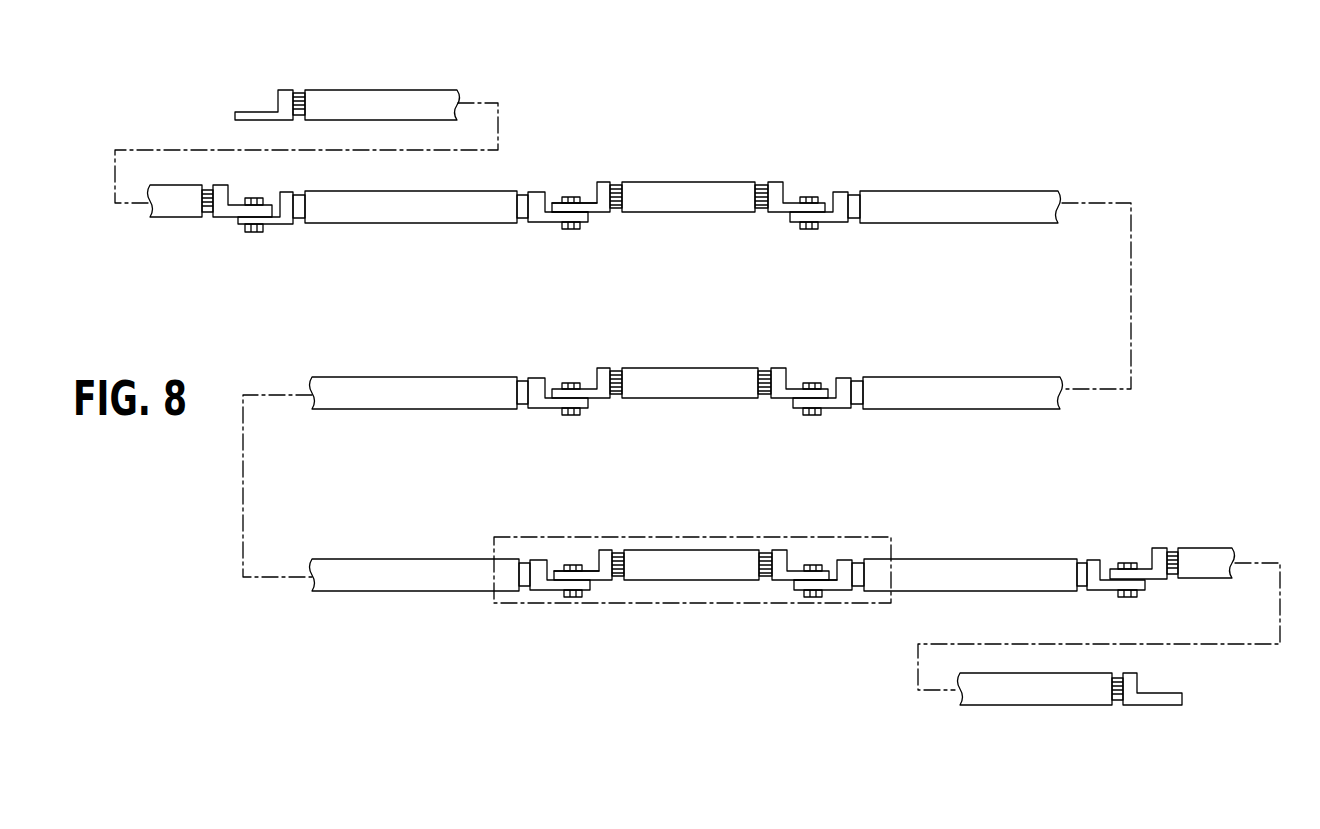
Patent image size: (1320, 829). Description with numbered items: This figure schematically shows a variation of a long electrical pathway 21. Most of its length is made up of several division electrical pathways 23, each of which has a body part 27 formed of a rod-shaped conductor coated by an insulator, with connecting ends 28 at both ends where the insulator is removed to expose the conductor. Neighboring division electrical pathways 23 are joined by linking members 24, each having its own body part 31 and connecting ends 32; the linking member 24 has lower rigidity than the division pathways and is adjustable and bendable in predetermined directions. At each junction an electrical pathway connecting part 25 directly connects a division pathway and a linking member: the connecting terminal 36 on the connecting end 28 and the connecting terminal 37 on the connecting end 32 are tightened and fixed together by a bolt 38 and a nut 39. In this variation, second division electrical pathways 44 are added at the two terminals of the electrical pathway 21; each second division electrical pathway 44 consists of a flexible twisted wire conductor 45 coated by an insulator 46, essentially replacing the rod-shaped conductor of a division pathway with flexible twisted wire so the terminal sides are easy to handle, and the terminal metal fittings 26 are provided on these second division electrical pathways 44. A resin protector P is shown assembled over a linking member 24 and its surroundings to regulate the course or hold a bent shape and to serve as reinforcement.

The electrical pathway 21 is at (1032, 132).
The division electrical pathway 23 is at (668, 374).
The linking member 24 is at (697, 369).
The electrical pathway connecting part 25 is at (253, 191).
The terminal metal fitting 26 is at (266, 110).
The body part 27 is at (456, 224).
The connecting end 28 is at (356, 225).
The body part 31 is at (695, 213).
The connecting end 32 is at (616, 209).
The connecting terminal 36 is at (536, 192).
The connecting terminal 37 is at (604, 182).
The bolt 38 is at (568, 203).
The nut 39 is at (568, 230).
The second division electrical pathway 44 is at (691, 404).
The twisted wire conductor 45 is at (380, 103).
The insulator 46 is at (333, 103).
The protector P is at (662, 604).